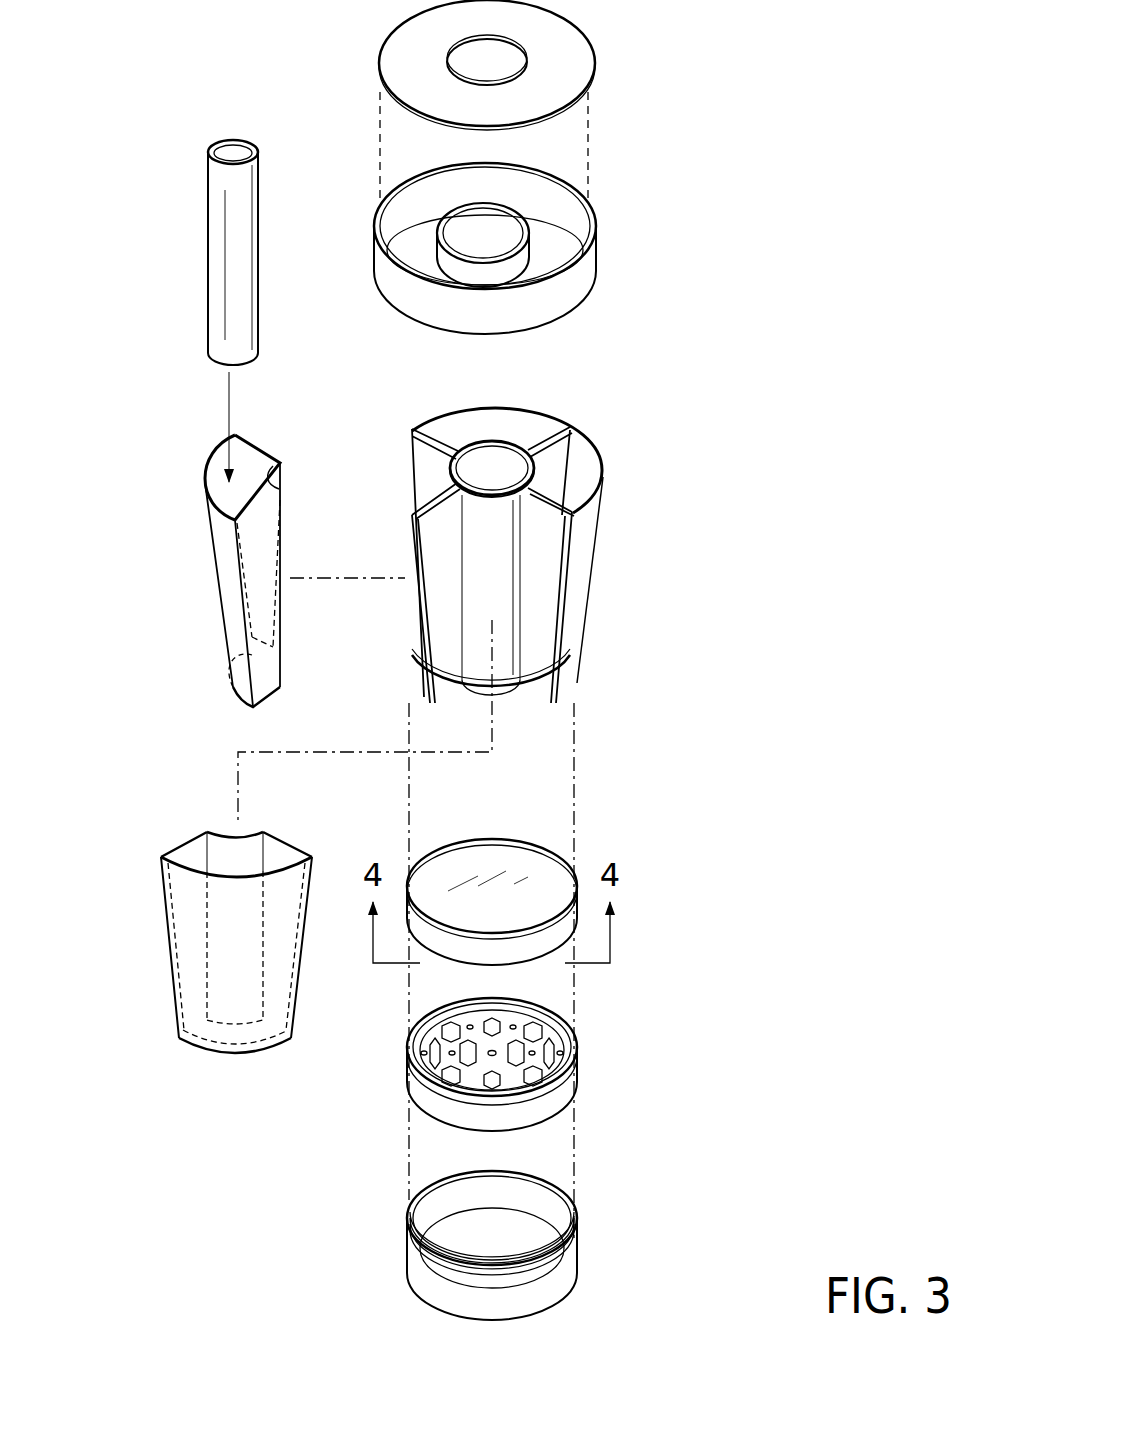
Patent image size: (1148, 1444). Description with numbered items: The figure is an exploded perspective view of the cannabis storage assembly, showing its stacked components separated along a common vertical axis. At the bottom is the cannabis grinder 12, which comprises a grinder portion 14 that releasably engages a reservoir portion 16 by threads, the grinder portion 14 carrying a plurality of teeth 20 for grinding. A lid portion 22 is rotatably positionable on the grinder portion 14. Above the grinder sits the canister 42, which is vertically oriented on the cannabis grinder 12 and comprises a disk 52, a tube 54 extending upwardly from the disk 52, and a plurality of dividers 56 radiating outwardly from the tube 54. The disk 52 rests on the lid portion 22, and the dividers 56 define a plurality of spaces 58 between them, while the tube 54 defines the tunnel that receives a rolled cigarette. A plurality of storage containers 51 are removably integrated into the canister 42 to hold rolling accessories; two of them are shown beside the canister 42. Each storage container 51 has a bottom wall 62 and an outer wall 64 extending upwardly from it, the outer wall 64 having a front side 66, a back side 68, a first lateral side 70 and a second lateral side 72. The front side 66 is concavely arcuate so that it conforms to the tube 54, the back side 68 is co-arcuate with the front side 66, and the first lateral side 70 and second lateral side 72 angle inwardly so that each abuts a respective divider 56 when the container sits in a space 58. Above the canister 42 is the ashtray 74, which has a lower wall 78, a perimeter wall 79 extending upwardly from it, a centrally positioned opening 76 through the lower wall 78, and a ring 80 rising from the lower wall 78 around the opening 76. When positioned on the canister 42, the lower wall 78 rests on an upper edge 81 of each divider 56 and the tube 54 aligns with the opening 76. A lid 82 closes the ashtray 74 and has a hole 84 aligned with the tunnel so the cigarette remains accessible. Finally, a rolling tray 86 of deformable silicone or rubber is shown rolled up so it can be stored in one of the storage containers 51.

The cannabis grinder 12 is at (497, 1055).
The grinder portion 14 is at (471, 1054).
The reservoir portion 16 is at (400, 1257).
The teeth 20 is at (523, 1052).
The lid portion 22 is at (563, 850).
The canister 42 is at (530, 582).
The storage containers 51 is at (212, 793).
The disk 52 is at (417, 667).
The tube 54 is at (500, 665).
The dividers 56 is at (438, 542).
The spaces 58 is at (428, 482).
The bottom wall 62 is at (270, 700).
The outer wall 64 is at (230, 587).
The front side 66 is at (236, 1007).
The back side 68 is at (227, 823).
The first lateral side 70 is at (170, 857).
The second lateral side 72 is at (288, 838).
The ashtray 74 is at (528, 241).
The opening 76 is at (473, 250).
The lower wall 78 is at (557, 250).
The perimeter wall 79 is at (573, 287).
The ring 80 is at (507, 275).
The upper edge 81 is at (548, 493).
The lid 82 is at (410, 55).
The hole 84 is at (490, 68).
The rolling tray 86 is at (223, 262).